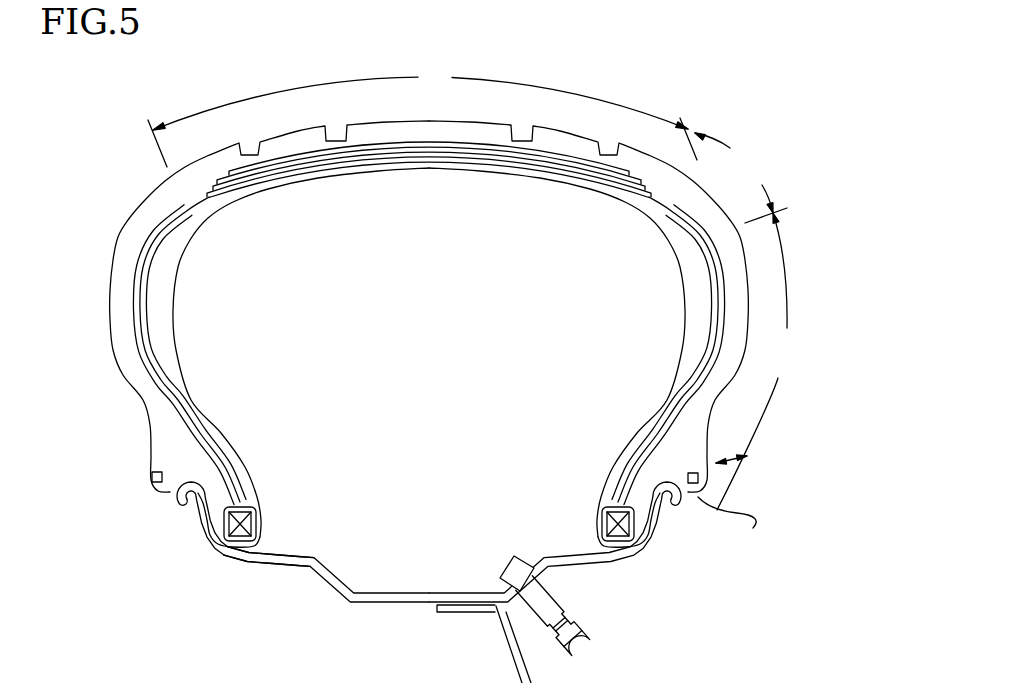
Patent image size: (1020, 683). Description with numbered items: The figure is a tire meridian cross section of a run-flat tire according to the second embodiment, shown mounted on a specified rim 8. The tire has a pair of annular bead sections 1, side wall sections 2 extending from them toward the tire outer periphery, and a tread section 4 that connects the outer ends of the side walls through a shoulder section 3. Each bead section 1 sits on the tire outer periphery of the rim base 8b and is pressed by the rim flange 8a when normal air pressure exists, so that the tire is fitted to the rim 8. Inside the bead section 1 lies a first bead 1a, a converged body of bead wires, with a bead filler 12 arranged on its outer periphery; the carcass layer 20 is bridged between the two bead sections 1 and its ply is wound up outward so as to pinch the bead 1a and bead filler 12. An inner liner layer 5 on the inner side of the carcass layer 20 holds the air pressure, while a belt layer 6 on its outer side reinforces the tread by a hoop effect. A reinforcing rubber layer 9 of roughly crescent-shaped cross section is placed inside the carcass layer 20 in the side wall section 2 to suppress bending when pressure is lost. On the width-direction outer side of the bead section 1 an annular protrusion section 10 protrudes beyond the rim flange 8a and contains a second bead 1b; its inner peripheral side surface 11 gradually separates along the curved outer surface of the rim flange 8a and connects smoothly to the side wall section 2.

The bead section 1 is at (150, 497).
The first bead 1a is at (600, 528).
The second bead 1b is at (150, 477).
The side wall section 2 is at (753, 361).
The shoulder portion 3 is at (741, 178).
The tread section 4 is at (422, 110).
The inner liner layer 5 is at (472, 172).
The belt layer 6 is at (409, 147).
The rim 8 is at (368, 603).
The rim flange 8a is at (186, 512).
The rim base 8b is at (255, 566).
The reinforcing rubber layer 9 is at (167, 315).
The annular protrusion section 10 is at (750, 452).
The inner peripheral side surface 11 is at (739, 537).
The bead filler 12 is at (632, 482).
The carcass layer 20 is at (295, 168).